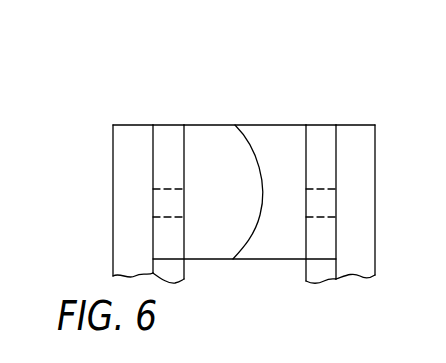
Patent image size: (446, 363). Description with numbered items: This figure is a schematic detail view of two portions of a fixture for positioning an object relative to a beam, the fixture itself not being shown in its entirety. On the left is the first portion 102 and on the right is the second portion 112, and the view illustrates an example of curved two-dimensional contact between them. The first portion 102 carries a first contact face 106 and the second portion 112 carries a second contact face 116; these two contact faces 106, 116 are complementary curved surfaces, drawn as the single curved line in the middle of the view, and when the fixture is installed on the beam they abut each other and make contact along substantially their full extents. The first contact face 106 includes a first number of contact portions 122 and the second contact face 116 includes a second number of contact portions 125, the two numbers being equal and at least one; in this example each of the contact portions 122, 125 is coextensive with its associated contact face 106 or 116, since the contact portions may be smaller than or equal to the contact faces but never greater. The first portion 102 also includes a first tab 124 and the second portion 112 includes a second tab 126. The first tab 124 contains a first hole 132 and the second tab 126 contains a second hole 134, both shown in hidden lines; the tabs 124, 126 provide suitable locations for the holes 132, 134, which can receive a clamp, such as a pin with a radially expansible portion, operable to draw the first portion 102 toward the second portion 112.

The first portion 102 is at (147, 121).
The second portion 112 is at (325, 102).
The first contact face 106 is at (268, 163).
The contact portions 122 is at (253, 143).
The contact portions 125 is at (259, 203).
The second contact face 116 is at (233, 233).
The first tab 124 is at (162, 237).
The second tab 126 is at (321, 142).
The first hole 132 is at (157, 203).
The second hole 134 is at (325, 202).